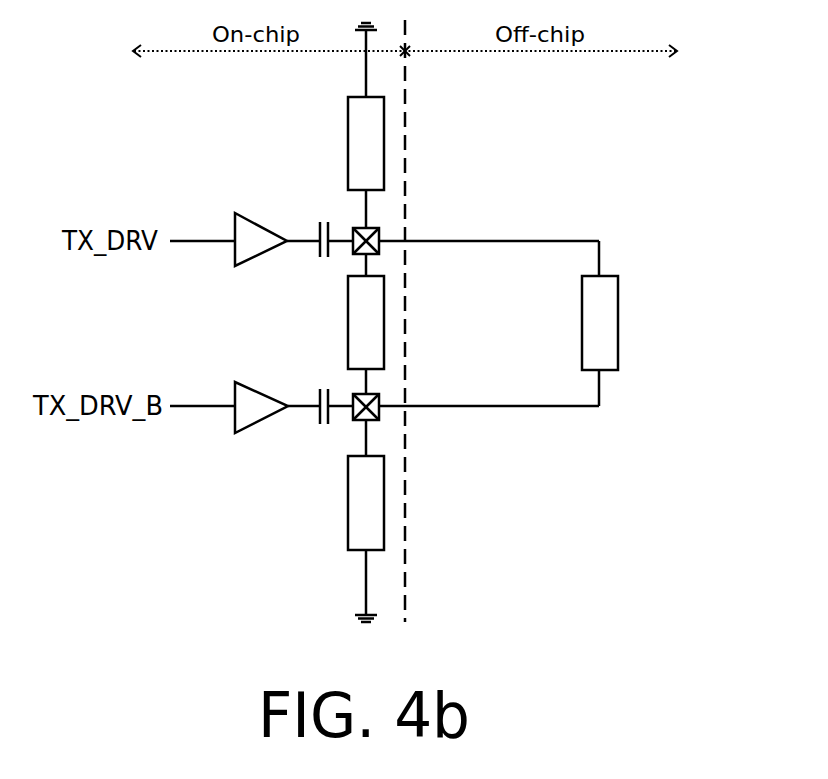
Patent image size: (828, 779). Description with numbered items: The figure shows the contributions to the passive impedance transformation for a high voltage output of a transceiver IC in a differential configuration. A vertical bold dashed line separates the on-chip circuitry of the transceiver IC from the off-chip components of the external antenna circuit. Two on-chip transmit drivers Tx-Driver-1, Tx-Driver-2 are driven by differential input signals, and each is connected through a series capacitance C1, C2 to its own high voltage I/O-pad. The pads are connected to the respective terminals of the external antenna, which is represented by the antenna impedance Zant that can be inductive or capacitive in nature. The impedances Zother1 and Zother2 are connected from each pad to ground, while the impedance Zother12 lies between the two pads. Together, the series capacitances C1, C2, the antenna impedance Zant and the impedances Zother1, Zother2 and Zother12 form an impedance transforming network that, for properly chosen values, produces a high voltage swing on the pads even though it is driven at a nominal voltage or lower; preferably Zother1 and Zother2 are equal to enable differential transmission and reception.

The other impedance connected to HV-I/O-pad-1 Zother1 is at (365, 162).
The other impedance between HV-I/O-pad-1 and HV-I/O-pad-2 Zother12 is at (371, 312).
The other impedance connected to HV-I/O-pad-2 Zother2 is at (365, 485).
The first transmit driver Tx-Driver-1 is at (255, 238).
The second transmit driver Tx-Driver-2 is at (250, 412).
The first series capacitance C1 is at (327, 259).
The second series capacitance C2 is at (327, 388).
The antenna impedance Zant is at (604, 308).